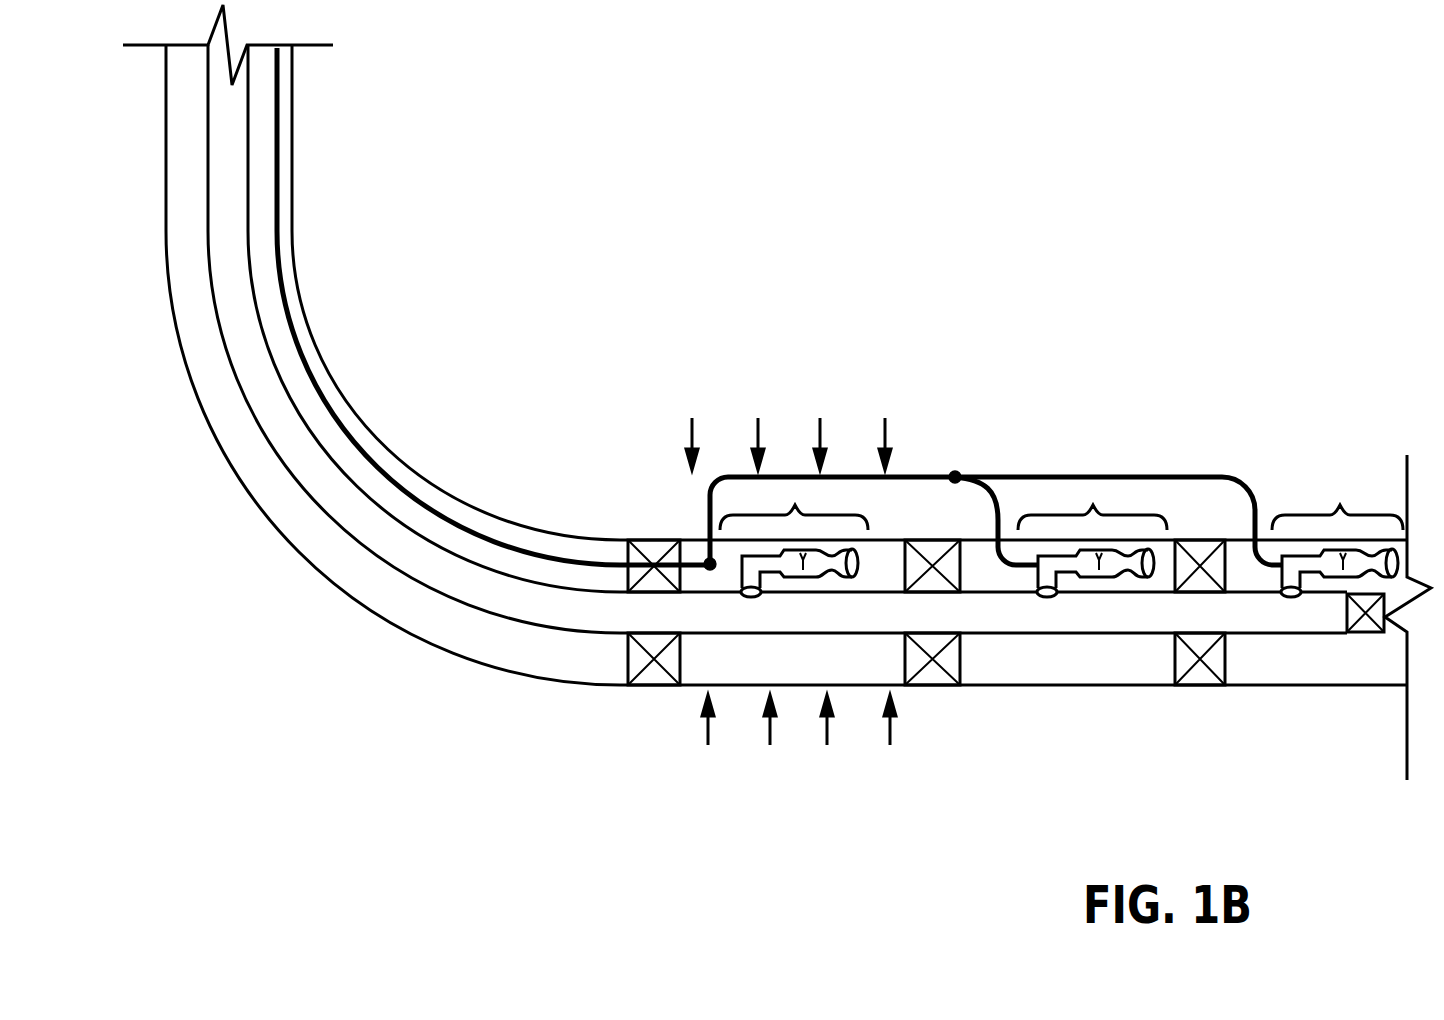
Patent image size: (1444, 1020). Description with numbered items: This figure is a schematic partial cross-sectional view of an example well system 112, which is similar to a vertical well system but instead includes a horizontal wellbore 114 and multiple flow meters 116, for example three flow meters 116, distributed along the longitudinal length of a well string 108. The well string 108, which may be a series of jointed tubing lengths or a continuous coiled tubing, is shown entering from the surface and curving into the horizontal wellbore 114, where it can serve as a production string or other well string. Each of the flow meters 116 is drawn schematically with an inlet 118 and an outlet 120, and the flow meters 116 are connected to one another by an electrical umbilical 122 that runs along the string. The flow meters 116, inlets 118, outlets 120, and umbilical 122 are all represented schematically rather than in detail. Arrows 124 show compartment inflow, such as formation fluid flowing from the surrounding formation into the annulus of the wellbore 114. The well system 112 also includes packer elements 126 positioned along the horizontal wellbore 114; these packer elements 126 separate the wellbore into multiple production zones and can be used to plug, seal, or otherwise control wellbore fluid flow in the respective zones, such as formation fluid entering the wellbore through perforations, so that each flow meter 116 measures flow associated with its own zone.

The well string 108 is at (267, 446).
The well system 112 is at (1003, 163).
The horizontal wellbore 114 is at (1012, 690).
The flow meters 116 is at (795, 503).
The inlets 118 is at (871, 558).
The outlets 120 is at (745, 602).
The electrical umbilical 122 is at (296, 347).
The compartment inflow arrows 124 is at (750, 763).
The packer elements 126 is at (647, 550).